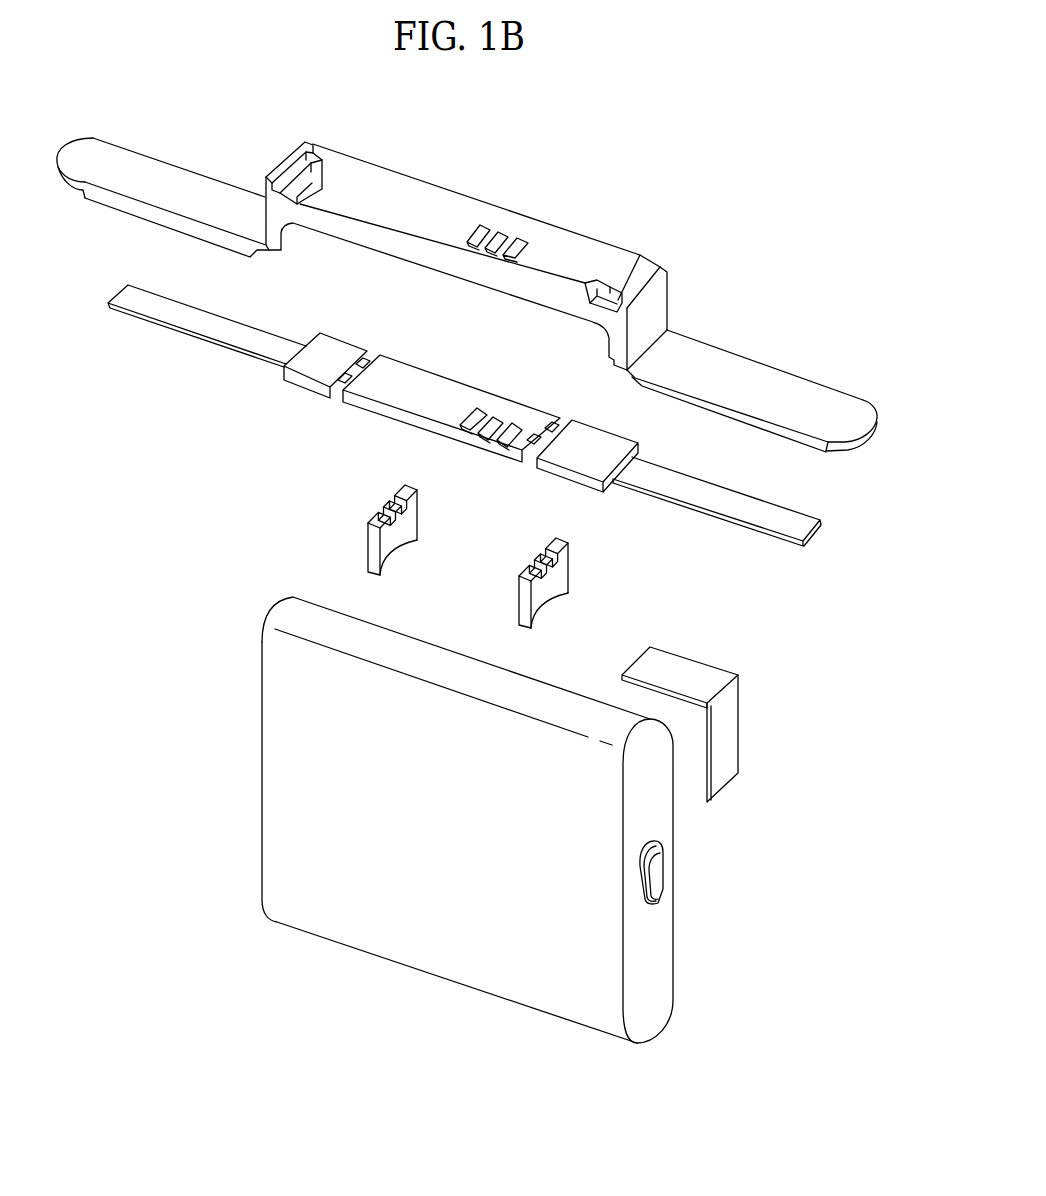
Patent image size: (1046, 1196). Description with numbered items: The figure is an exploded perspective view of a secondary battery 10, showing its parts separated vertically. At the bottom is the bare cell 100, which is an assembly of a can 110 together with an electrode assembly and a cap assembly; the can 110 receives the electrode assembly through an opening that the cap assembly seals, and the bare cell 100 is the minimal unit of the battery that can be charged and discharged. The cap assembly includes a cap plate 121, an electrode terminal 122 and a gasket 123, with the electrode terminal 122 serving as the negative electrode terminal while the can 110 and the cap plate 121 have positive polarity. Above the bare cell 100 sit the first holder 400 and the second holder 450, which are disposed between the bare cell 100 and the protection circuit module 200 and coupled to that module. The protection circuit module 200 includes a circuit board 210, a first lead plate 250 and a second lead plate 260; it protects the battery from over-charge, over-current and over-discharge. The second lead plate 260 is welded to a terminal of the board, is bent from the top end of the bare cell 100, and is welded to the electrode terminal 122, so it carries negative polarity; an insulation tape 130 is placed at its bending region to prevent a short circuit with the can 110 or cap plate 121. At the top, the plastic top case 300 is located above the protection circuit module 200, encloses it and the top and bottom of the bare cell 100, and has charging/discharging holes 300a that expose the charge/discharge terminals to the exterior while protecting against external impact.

The secondary battery 10 is at (797, 134).
The bare cell 100 is at (253, 687).
The can 110 is at (272, 760).
The cap plate 121 is at (665, 967).
The electrode terminal 122 is at (657, 870).
The gasket 123 is at (657, 845).
The insulation tape 130 is at (728, 737).
The protection circuit module 200 is at (112, 291).
The circuit board 210 is at (472, 380).
The first lead plate 250 is at (205, 324).
The second lead plate 260 is at (715, 498).
The top case 300 is at (383, 177).
The charging/discharging holes 300a is at (519, 243).
The first holder 400 is at (361, 522).
The second holder 450 is at (513, 575).